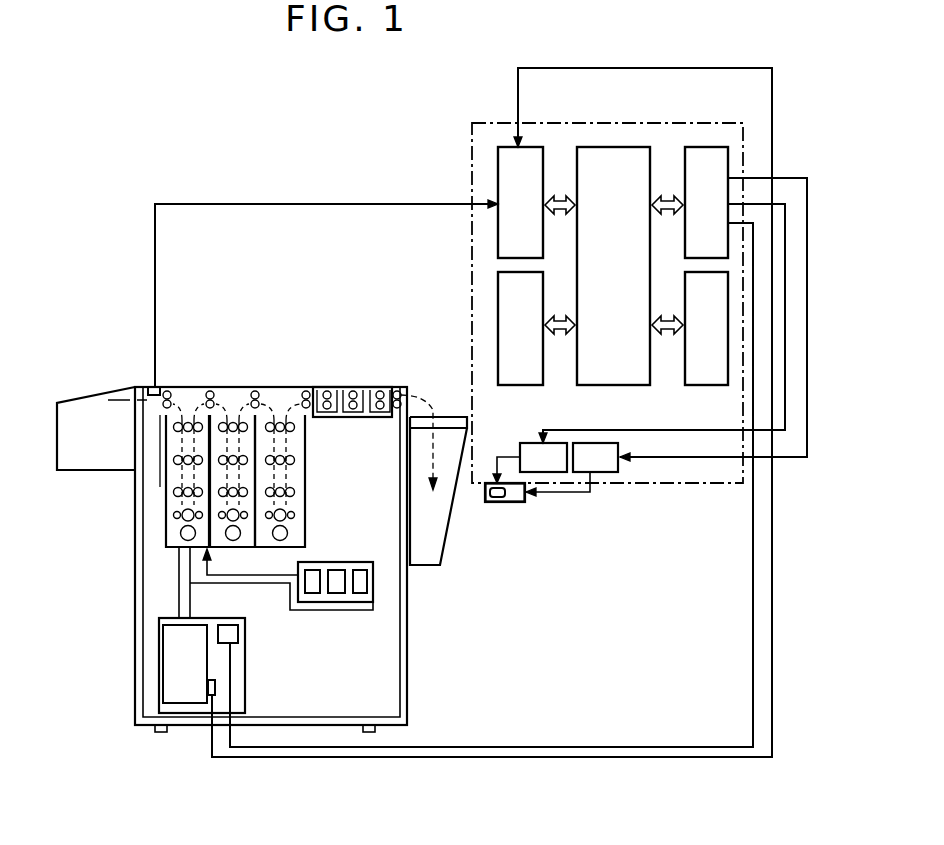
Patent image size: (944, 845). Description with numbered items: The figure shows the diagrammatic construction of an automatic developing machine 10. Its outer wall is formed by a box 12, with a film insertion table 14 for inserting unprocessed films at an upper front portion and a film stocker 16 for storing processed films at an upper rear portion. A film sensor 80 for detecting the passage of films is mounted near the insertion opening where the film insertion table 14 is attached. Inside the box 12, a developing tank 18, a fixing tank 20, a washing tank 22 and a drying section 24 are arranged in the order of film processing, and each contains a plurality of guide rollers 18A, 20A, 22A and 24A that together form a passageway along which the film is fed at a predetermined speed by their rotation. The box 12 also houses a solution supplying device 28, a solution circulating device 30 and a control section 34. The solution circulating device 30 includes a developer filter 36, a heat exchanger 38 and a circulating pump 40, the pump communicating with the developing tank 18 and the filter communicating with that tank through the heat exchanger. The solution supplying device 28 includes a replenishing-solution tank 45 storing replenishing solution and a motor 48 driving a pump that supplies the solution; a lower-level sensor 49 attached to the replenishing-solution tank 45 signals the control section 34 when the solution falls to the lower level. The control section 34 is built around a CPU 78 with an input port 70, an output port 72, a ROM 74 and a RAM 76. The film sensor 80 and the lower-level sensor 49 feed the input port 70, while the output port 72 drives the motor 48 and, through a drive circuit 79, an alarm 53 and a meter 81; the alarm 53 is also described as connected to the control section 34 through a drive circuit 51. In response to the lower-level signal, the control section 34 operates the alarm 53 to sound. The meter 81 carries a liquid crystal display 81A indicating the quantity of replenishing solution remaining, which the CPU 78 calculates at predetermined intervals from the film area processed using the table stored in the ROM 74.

The automatic developing machine 10 is at (528, 68).
The box 12 is at (238, 387).
The film insertion table 14 is at (95, 408).
The film stocker 16 is at (430, 565).
The developing tank 18 is at (175, 548).
The guide rollers 18A is at (172, 396).
The fixing tank 20 is at (223, 548).
The guide rollers 20A is at (215, 393).
The washing tank 22 is at (257, 549).
The guide rollers 22A is at (261, 393).
The drying section 24 is at (355, 417).
The guide rollers 24A is at (397, 392).
The solution supplying device 28 is at (245, 675).
The solution circulating device 30 is at (315, 562).
The control section 34 is at (592, 123).
The developer filter 36 is at (336, 570).
The heat exchanger 38 is at (317, 593).
The circulating pump 40 is at (360, 570).
The replenishing-solution tank 45 is at (163, 683).
The motor 48 is at (238, 635).
The lower-level sensor 49 is at (215, 688).
The drive circuit 51 is at (608, 472).
The alarm 53 is at (518, 502).
The input port 70 is at (533, 147).
The output port 72 is at (708, 147).
The ROM 74 is at (688, 385).
The RAM 76 is at (518, 385).
The CPU 78 is at (640, 147).
The drive circuit 79 is at (660, 530).
The film sensor 80 is at (155, 387).
The meter 81 is at (487, 502).
The liquid crystal display 81A is at (497, 502).